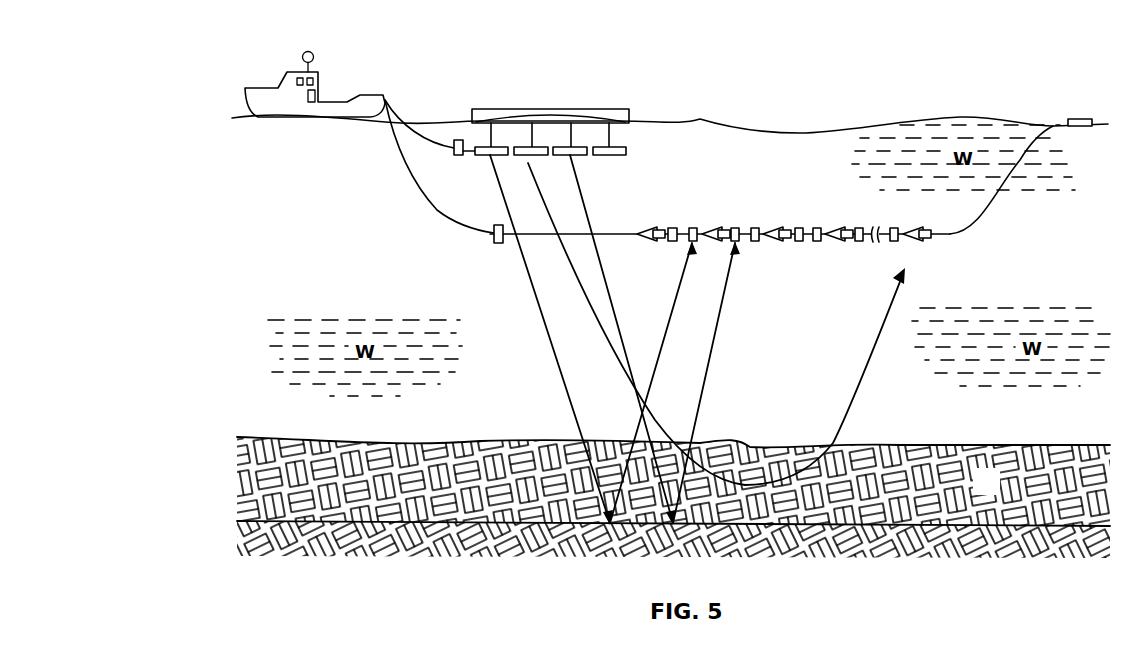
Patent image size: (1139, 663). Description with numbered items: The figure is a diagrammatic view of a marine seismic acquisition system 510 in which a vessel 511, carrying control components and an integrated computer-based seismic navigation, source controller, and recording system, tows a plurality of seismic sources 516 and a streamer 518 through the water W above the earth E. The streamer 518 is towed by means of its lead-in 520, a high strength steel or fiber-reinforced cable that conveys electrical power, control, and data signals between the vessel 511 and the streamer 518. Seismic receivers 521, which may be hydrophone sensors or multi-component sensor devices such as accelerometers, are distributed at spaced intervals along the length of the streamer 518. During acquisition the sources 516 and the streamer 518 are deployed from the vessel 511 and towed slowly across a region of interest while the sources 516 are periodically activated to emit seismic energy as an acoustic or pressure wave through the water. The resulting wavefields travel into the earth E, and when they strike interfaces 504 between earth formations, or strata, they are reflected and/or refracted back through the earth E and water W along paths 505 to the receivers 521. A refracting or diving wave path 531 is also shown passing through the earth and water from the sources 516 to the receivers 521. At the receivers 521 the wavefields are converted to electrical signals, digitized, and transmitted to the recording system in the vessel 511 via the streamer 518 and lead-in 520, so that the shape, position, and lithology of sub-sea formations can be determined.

The interfaces 504 is at (900, 445).
The paths 505 is at (717, 327).
The marine seismic acquisition system 510 is at (866, 55).
The vessel 511 is at (263, 88).
The seismic sources 516 is at (577, 156).
The streamers 518 is at (953, 237).
The lead-ins 520 is at (415, 178).
The seismic receivers 521 is at (733, 228).
The refracting or diving wave path 531 is at (852, 407).